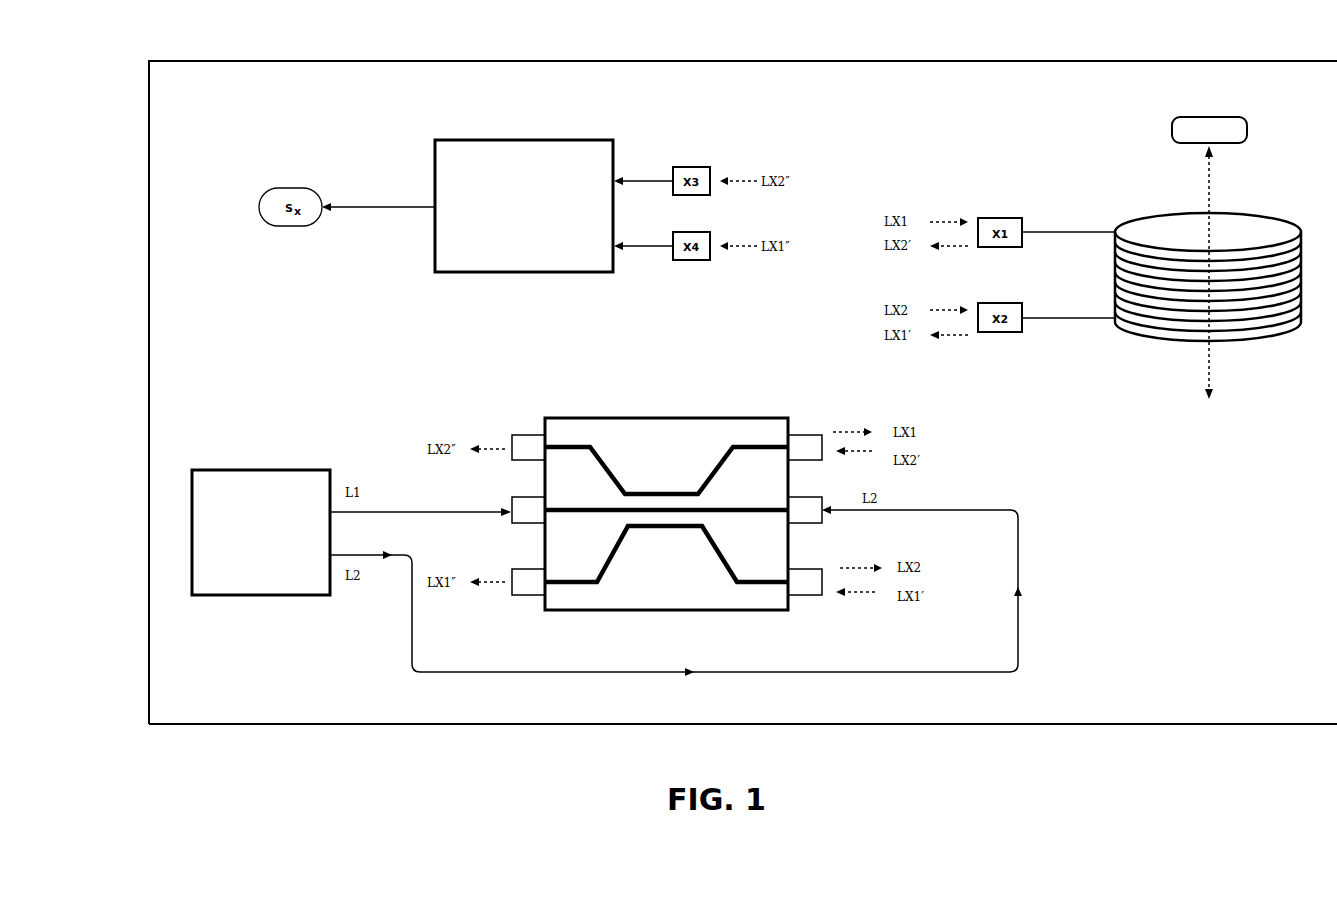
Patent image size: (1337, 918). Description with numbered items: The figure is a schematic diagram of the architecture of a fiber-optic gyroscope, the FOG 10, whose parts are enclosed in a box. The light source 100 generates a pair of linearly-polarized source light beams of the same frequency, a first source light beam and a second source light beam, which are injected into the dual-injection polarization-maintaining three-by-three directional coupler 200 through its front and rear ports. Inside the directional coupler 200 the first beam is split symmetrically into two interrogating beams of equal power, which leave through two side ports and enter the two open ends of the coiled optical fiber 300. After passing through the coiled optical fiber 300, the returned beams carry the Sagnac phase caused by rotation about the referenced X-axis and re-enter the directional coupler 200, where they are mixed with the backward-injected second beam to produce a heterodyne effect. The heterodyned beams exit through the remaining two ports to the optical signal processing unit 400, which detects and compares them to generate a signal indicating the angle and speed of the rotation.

The FOG 10 is at (197, 54).
The light source 100 is at (278, 468).
The dual-injection polarization-maintaining 3×3 directional coupler 200 is at (583, 417).
The coiled optical fiber 300 is at (1268, 217).
The optical signal processing unit 400 is at (467, 139).